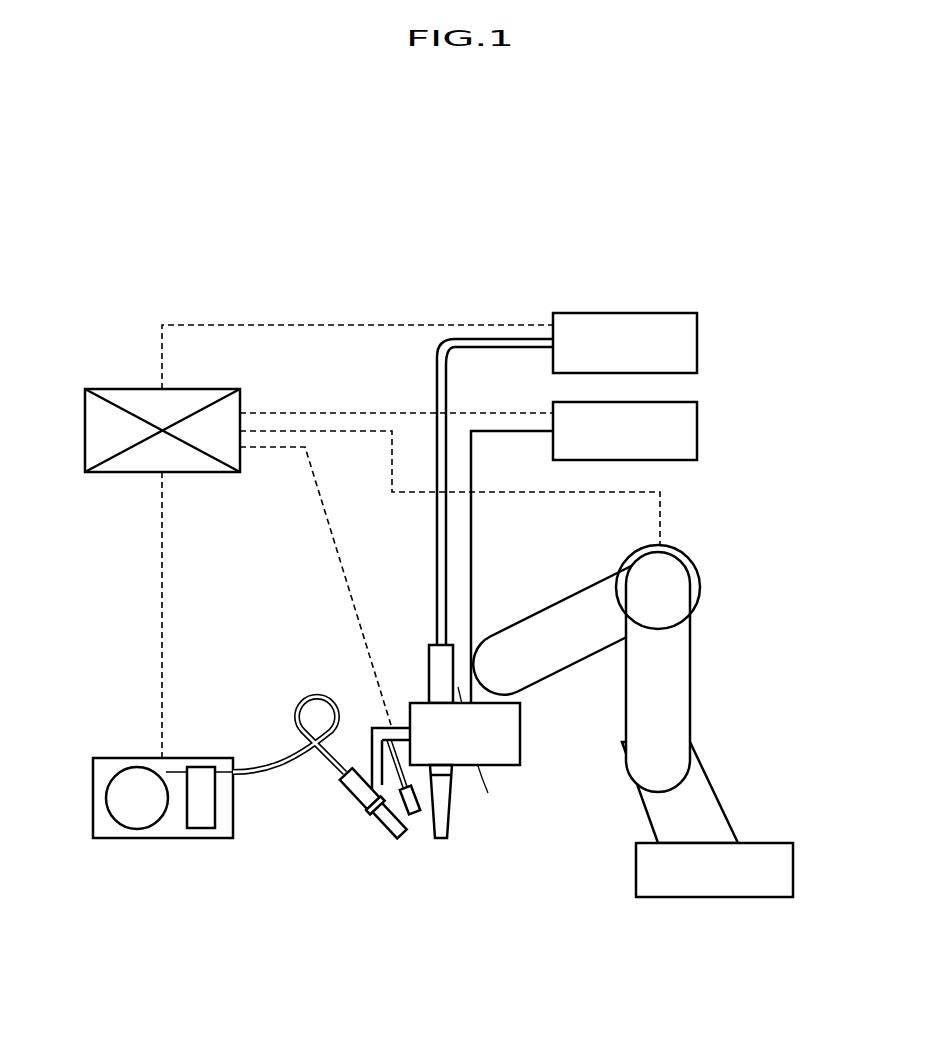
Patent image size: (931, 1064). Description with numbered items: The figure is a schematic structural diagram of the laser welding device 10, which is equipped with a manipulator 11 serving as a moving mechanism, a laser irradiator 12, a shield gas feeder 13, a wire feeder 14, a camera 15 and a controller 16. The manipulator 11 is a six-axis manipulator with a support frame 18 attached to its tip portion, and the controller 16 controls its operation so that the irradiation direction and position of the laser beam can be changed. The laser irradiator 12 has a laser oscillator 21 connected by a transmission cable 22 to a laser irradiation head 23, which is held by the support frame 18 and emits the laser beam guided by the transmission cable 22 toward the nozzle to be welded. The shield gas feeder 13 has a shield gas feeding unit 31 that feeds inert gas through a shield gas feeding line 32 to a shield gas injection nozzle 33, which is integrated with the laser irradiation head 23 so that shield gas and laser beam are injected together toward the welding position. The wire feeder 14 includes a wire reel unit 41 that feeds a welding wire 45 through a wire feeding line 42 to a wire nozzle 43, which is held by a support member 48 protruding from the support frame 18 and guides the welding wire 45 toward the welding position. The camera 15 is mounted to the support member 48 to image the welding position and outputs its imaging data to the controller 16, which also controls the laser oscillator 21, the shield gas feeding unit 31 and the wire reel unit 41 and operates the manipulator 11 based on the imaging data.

The laser welding device 10 is at (528, 256).
The manipulator 11 is at (694, 692).
The laser irradiator 12 is at (440, 336).
The shield gas feeder 13 is at (724, 392).
The wire feeder 14 is at (155, 846).
The camera 15 is at (413, 815).
The controller 16 is at (108, 389).
The support frame 18 is at (520, 736).
The laser oscillator 21 is at (629, 313).
The transmission cable 22 is at (437, 560).
The laser irradiation head 23 is at (428, 662).
The shield gas feeding unit 31 is at (697, 437).
The shield gas feeding line 32 is at (471, 468).
The shield gas injection nozzle 33 is at (479, 754).
The wire reel unit 41 is at (197, 838).
The wire feeding line 42 is at (268, 777).
The wire nozzle 43 is at (373, 814).
The welding wire 45 is at (172, 768).
The support member 48 is at (380, 728).